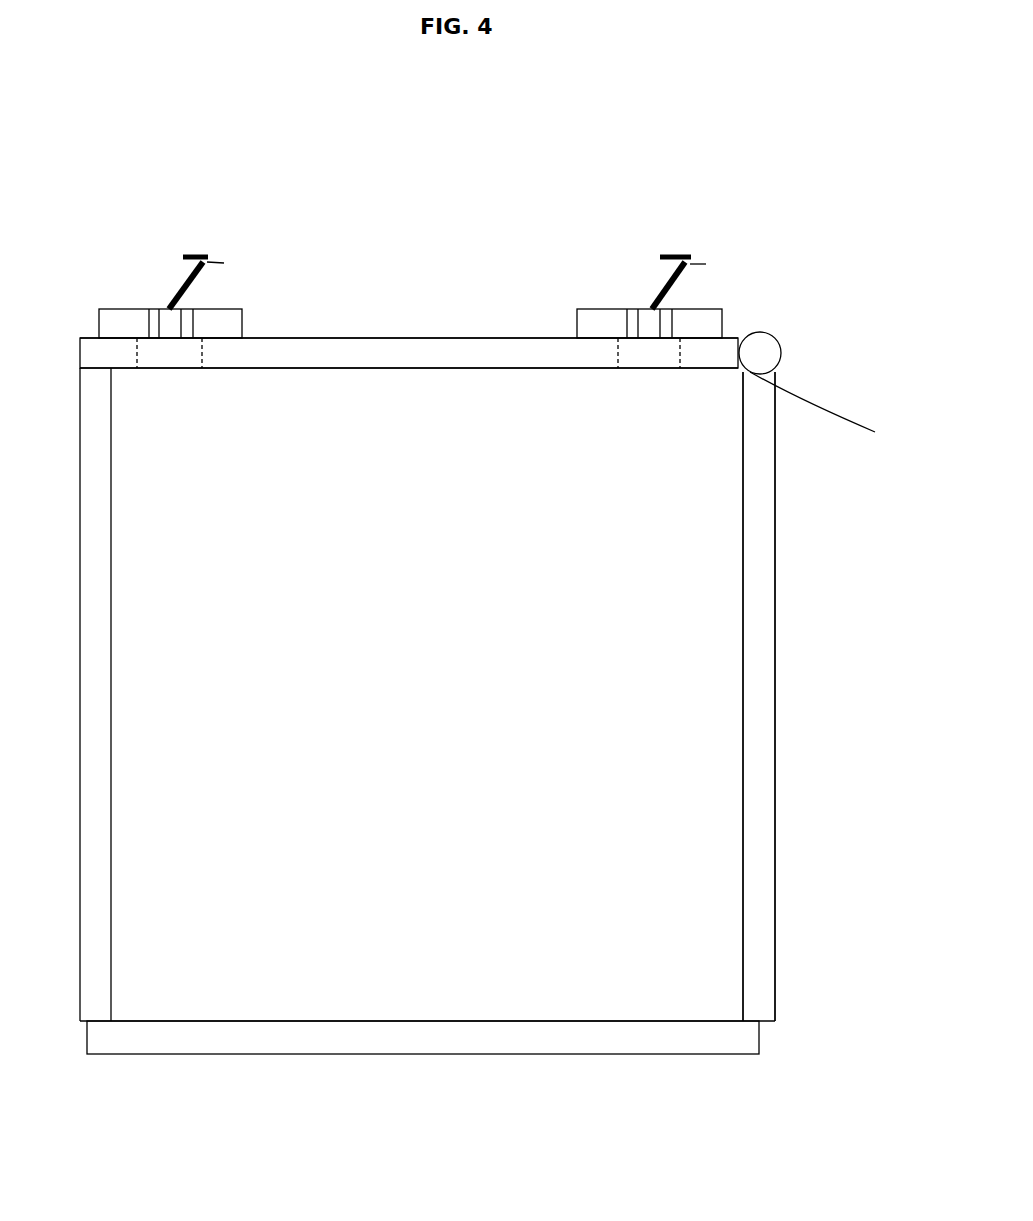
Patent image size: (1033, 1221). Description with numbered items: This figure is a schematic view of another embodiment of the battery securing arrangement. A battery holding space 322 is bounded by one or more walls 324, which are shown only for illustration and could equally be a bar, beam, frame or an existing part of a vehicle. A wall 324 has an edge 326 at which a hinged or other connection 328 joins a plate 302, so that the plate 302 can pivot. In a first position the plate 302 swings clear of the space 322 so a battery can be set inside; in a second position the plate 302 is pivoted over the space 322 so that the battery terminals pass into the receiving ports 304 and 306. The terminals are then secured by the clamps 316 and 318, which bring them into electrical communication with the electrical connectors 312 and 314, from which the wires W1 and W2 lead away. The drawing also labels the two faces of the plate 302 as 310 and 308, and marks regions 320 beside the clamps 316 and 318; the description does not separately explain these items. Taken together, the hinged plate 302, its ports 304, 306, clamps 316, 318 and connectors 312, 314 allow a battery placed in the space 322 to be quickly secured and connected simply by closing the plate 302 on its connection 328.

The plate 302 is at (95, 358).
The receiving port 304 is at (192, 360).
The receiving port 306 is at (668, 370).
The lower surface of cap plate 308 is at (406, 370).
The upper surface of cap plate 310 is at (404, 338).
The electrical connector 312 is at (153, 300).
The electrical connector 314 is at (622, 298).
The clamp 316 is at (118, 318).
The clamp 318 is at (580, 325).
The gasket 320 is at (195, 327).
The battery holding space 322 is at (462, 702).
The wall 324 is at (760, 515).
The edge of wall 326 is at (837, 408).
The hinged or other connection 328 is at (762, 357).
The wire W1 is at (185, 292).
The wire W2 is at (655, 318).